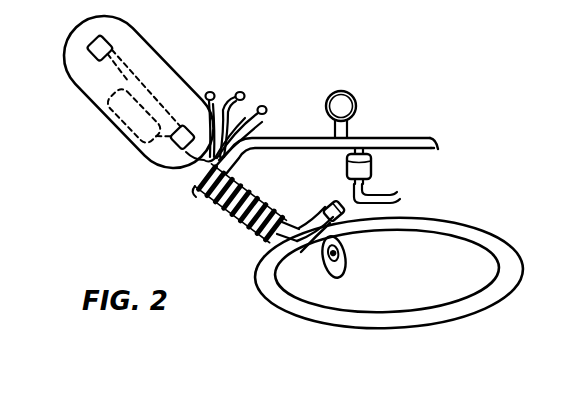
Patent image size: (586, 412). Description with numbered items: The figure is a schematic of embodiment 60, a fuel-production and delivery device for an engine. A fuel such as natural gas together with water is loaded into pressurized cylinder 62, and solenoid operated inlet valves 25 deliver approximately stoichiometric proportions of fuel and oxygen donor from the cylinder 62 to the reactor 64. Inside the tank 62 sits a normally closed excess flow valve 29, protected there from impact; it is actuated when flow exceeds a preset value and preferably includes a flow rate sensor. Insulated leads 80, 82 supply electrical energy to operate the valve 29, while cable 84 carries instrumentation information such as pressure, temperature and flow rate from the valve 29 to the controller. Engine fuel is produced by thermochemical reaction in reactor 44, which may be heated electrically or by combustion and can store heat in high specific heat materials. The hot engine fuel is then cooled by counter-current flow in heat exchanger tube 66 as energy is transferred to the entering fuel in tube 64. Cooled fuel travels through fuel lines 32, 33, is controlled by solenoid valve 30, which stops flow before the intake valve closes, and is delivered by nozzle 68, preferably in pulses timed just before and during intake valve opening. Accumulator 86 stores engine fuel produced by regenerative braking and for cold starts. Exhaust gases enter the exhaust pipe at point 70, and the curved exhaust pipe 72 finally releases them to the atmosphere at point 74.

The solenoid operated inlet valves 25 is at (92, 38).
The excess flow valve 29 is at (166, 162).
The solenoid valve 30 is at (373, 167).
The fuel line 32 is at (296, 137).
The fuel line 33 is at (402, 137).
The reactor 44 is at (270, 239).
The embodiment 60 is at (354, 68).
The pressurized cylinder 62 is at (90, 89).
The reactor 64 is at (196, 192).
The counter-current heat exchanger tube 66 is at (248, 190).
The nozzle 68 is at (398, 199).
The exhaust pipe entry point 70 is at (345, 254).
The exhaust pipe 72 is at (323, 312).
The exhaust release point 74 is at (337, 204).
The insulated lead 80 is at (240, 92).
The insulated lead 82 is at (210, 92).
The cable 84 is at (262, 105).
The accumulator 86 is at (357, 102).